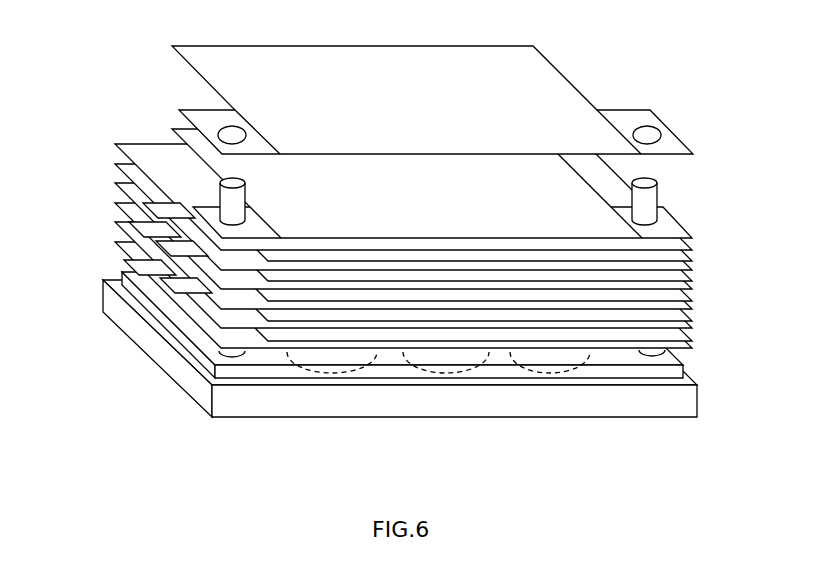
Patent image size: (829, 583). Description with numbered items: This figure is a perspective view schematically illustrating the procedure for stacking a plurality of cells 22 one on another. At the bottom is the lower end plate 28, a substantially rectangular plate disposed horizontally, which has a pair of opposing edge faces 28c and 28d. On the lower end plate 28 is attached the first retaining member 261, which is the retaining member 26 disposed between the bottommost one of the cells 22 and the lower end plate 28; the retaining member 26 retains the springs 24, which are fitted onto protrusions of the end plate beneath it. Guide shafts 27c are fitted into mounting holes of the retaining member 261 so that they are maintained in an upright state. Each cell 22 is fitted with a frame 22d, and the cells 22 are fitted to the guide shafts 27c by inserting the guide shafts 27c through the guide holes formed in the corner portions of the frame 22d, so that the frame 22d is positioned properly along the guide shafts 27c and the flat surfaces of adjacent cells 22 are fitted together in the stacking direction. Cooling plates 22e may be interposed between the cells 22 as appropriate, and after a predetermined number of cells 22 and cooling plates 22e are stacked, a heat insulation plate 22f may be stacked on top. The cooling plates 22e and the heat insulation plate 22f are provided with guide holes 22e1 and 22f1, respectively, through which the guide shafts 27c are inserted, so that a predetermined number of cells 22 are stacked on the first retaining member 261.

The cell 22 is at (98, 233).
The frame 22d is at (697, 244).
The cooling plate 22e is at (190, 138).
The guide hole of cooling plate 22e1 is at (190, 210).
The heat insulation plate 22f is at (548, 70).
The guide hole of heat insulation plate 22f1 is at (240, 128).
The spring 24 is at (355, 373).
The retaining member 26 is at (698, 365).
The first retaining member 261 is at (160, 312).
The guide shaft 27c is at (248, 188).
The lower end plate 28 is at (198, 384).
The edge face of lower end plate 28c is at (252, 412).
The edge face of lower end plate 28d is at (100, 300).